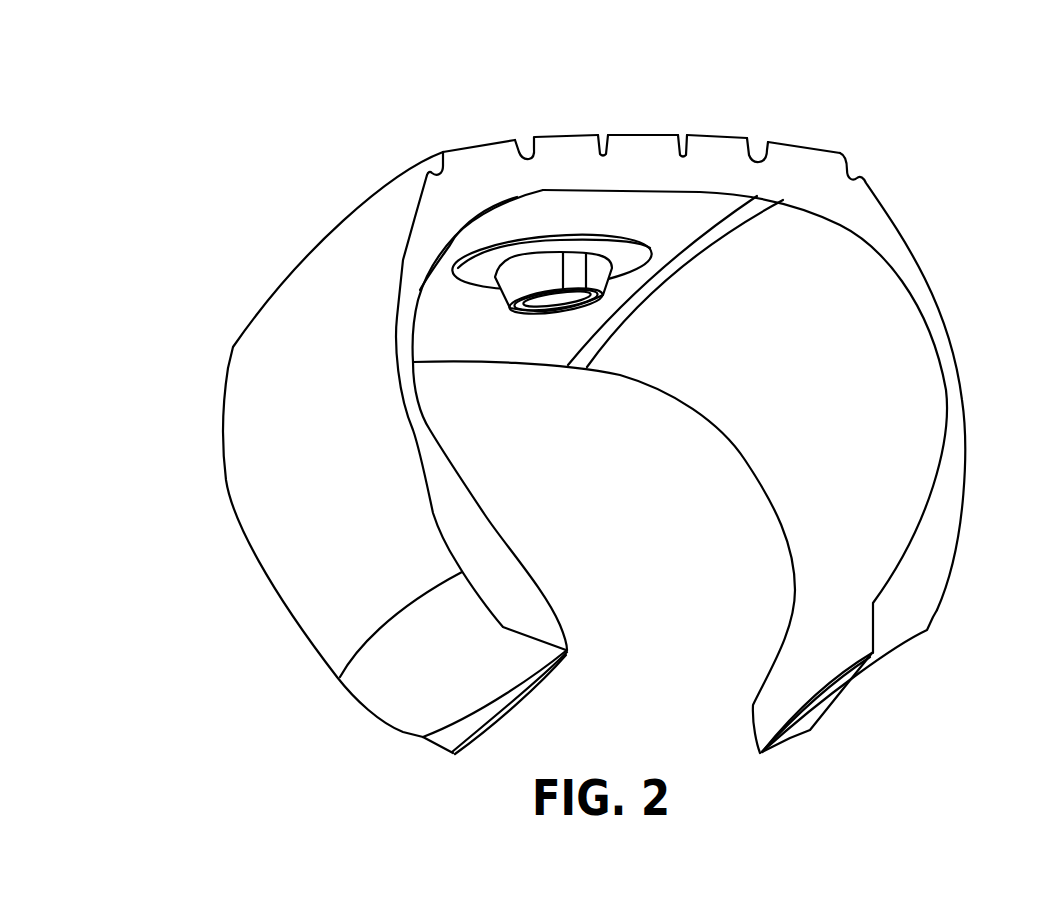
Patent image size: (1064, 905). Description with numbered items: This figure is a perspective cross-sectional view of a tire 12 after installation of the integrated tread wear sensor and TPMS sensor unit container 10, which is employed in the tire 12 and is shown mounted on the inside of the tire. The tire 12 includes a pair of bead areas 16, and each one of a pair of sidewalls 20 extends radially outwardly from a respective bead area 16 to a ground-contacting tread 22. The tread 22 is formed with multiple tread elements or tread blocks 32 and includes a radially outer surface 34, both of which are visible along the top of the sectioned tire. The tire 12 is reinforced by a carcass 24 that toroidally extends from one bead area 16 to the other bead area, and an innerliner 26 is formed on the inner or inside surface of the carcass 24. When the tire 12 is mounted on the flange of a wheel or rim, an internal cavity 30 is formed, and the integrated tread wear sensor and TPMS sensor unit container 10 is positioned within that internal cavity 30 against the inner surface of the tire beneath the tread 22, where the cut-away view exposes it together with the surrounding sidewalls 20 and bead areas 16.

The integrated tread wear sensor and TPMS sensor unit container 10 is at (488, 330).
The tire 12 is at (602, 401).
The bead area 16 is at (560, 621).
The sidewall 20 is at (948, 330).
The tread 22 is at (726, 111).
The carcass 24 is at (690, 222).
The innerliner 26 is at (657, 183).
The internal cavity 30 is at (591, 497).
The tread blocks 32 is at (630, 153).
The radially outer surface 34 is at (693, 132).